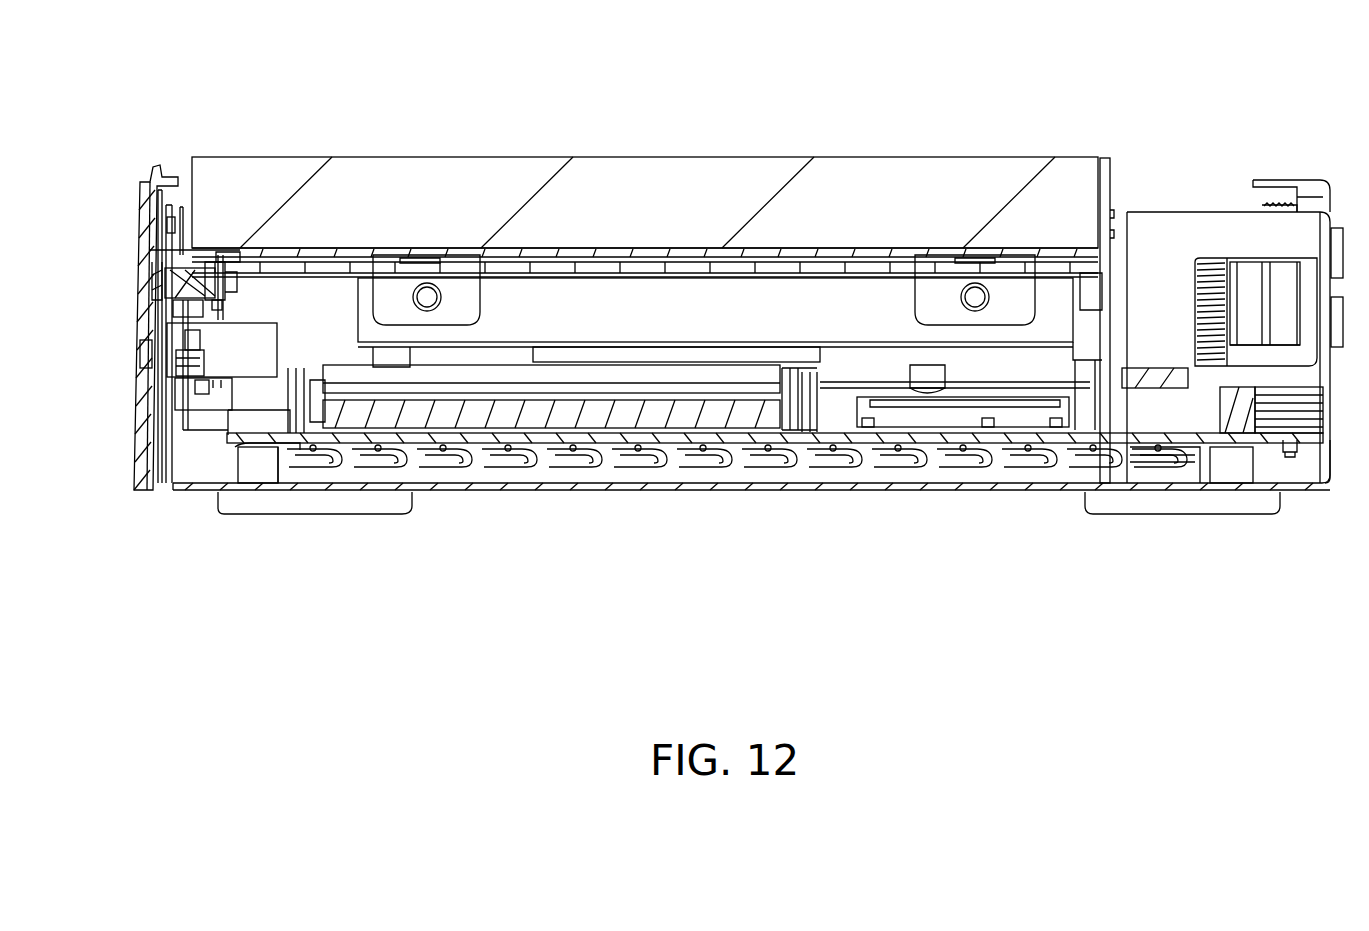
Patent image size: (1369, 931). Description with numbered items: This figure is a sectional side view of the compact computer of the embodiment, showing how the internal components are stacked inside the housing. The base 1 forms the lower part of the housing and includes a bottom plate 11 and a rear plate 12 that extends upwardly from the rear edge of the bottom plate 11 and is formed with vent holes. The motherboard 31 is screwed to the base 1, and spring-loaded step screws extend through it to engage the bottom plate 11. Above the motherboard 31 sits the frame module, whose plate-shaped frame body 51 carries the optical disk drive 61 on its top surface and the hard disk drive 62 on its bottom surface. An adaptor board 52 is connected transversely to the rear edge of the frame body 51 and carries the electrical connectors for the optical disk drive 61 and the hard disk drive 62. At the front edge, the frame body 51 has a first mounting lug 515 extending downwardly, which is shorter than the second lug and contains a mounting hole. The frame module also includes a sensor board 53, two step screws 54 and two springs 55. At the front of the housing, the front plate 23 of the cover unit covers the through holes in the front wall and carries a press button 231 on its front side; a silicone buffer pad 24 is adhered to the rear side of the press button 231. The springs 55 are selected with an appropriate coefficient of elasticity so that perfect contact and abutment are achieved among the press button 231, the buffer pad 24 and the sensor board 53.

The base 1 is at (884, 490).
The bottom plate 11 is at (775, 488).
The rear plate 12 is at (1322, 218).
The front plate 23 is at (130, 170).
The press button 231 is at (140, 356).
The buffer pad 24 is at (150, 330).
The motherboard 31 is at (553, 440).
The frame body 51 is at (562, 253).
The first mounting lug 515 is at (225, 268).
The adaptor board 52 is at (1105, 225).
The sensor board 53 is at (158, 292).
The step screw 54 is at (190, 280).
The spring 55 is at (213, 268).
The optical disk drive 61 is at (428, 190).
The hard disk drive 62 is at (648, 305).